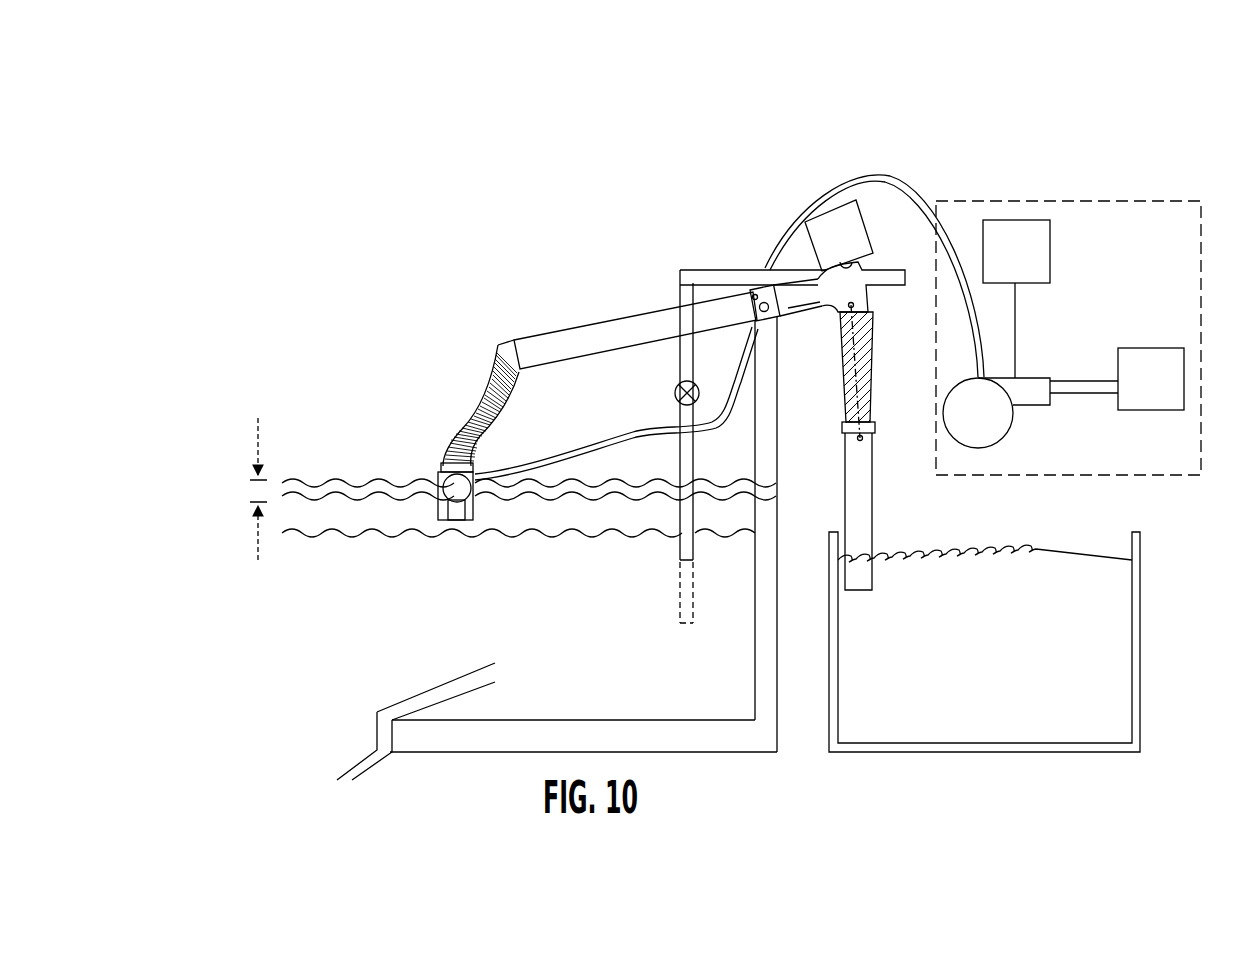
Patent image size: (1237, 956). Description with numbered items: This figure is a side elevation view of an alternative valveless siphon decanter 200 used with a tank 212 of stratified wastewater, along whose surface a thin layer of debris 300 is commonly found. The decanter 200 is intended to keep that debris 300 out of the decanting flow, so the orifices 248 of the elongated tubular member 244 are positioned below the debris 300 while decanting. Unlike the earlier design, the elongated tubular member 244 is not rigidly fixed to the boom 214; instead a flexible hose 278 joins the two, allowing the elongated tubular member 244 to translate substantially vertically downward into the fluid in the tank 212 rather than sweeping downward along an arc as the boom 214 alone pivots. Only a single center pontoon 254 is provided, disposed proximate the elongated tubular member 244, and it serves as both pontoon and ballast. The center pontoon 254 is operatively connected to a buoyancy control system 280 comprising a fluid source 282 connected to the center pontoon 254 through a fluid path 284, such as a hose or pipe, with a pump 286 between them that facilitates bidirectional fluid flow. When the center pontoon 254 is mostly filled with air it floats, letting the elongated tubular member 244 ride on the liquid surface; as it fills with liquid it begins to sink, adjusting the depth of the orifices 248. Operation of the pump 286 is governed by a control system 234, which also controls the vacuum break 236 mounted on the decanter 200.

The decanter 200 is at (946, 123).
The tank 212 is at (686, 737).
The boom 214 is at (636, 316).
The control system 234 is at (1016, 299).
The vacuum break 236 is at (674, 389).
The elongated tubular member 244 is at (437, 495).
The orifices 248 is at (474, 510).
The center pontoon 254 is at (452, 521).
The flexible hose 278 is at (509, 421).
The buoyancy control system 280 is at (1100, 189).
The fluid source 282 is at (929, 203).
The fluid path 284 is at (843, 183).
The pump 286 is at (996, 413).
The debris 300 is at (227, 467).